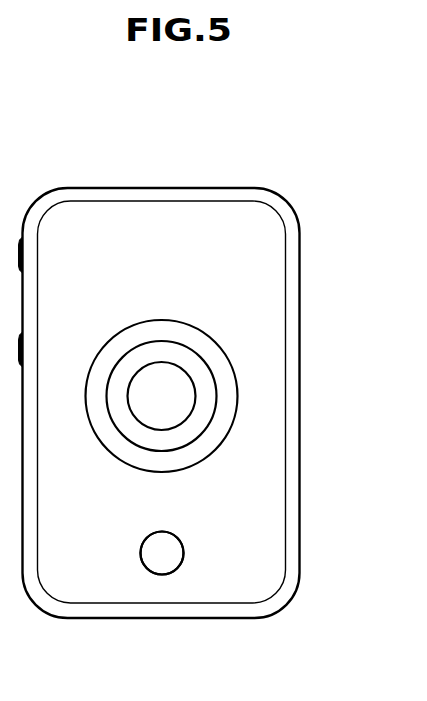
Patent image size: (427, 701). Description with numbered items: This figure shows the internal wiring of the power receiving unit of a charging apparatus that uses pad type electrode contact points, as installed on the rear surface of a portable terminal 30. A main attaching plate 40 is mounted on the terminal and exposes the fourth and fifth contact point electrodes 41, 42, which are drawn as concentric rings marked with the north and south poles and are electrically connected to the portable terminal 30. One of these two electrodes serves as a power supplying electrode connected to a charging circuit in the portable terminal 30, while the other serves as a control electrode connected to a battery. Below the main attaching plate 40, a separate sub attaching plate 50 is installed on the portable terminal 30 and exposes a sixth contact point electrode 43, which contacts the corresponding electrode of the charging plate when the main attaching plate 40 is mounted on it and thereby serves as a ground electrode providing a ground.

The portable terminal 30 is at (143, 222).
The main attaching plate 40 is at (218, 422).
The fourth contact point electrode 41 is at (178, 397).
The fifth contact point electrode 42 is at (196, 372).
The sixth contact point electrode 43 is at (162, 557).
The sub attaching plate 50 is at (178, 567).